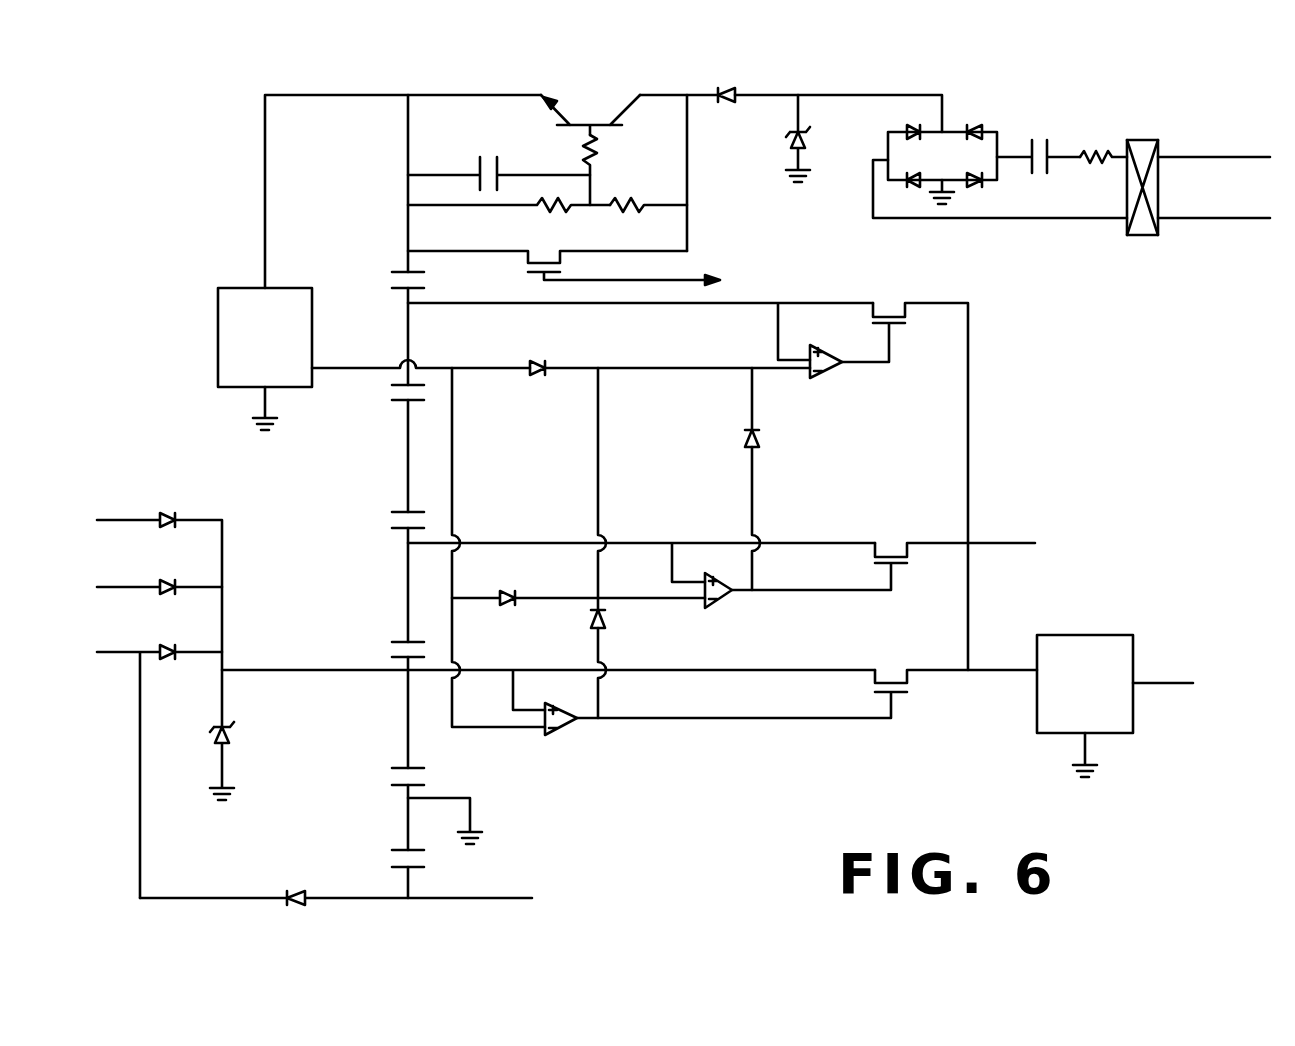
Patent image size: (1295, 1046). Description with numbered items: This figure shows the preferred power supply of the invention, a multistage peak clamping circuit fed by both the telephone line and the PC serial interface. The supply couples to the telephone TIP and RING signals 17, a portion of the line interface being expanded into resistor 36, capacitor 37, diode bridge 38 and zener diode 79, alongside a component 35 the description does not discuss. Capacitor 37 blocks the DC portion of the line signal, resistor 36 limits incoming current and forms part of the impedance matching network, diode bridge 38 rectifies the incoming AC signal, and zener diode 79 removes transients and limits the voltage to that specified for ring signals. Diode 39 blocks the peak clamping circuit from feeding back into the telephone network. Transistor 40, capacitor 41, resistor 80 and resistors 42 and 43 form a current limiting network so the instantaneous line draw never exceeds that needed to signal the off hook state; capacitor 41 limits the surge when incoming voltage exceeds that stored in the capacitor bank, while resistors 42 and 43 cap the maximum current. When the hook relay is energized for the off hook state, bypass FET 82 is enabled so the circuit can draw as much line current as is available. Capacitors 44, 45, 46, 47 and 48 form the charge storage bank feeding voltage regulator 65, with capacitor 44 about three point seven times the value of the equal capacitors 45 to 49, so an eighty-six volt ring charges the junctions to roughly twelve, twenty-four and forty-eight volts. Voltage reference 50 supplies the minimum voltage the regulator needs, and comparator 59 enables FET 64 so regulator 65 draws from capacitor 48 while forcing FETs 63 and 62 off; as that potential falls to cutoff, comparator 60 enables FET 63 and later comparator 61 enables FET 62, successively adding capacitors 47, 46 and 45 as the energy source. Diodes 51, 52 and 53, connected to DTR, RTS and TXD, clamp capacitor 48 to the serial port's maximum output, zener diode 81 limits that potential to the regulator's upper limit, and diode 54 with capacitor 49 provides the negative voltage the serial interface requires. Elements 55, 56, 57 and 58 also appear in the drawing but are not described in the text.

The telephone line TIP and RING signals 17 is at (1232, 205).
The hybrid transformer 35 is at (1157, 275).
The resistor 36 is at (1110, 137).
The capacitor 37 is at (1053, 210).
The diode bridge 38 is at (961, 172).
The diode 39 is at (749, 139).
The transistor 40 is at (612, 108).
The capacitor 41 is at (455, 167).
The resistor 42 is at (567, 244).
The resistor 43 is at (640, 246).
The capacitor 44 is at (380, 297).
The capacitor 45 is at (375, 412).
The capacitor 46 is at (372, 540).
The capacitor 47 is at (380, 669).
The capacitor 48 is at (383, 793).
The capacitor 49 is at (383, 871).
The voltage reference 50 is at (285, 376).
The diode 51 is at (213, 513).
The diode 52 is at (215, 575).
The diode 53 is at (215, 638).
The diode 54 is at (313, 947).
The diode 55 is at (561, 421).
The diode 56 is at (820, 452).
The diode 57 is at (535, 652).
The diode 58 is at (657, 648).
The voltage comparator 59 is at (608, 764).
The comparator 60 is at (765, 634).
The comparator 61 is at (873, 401).
The FET 62 is at (950, 352).
The FET 63 is at (952, 604).
The FET 64 is at (955, 707).
The voltage regulator 65 is at (1108, 728).
The zener diode 79 is at (861, 156).
The resistor 80 is at (655, 170).
The zener diode 81 is at (285, 762).
The bypass FET 82 is at (511, 287).